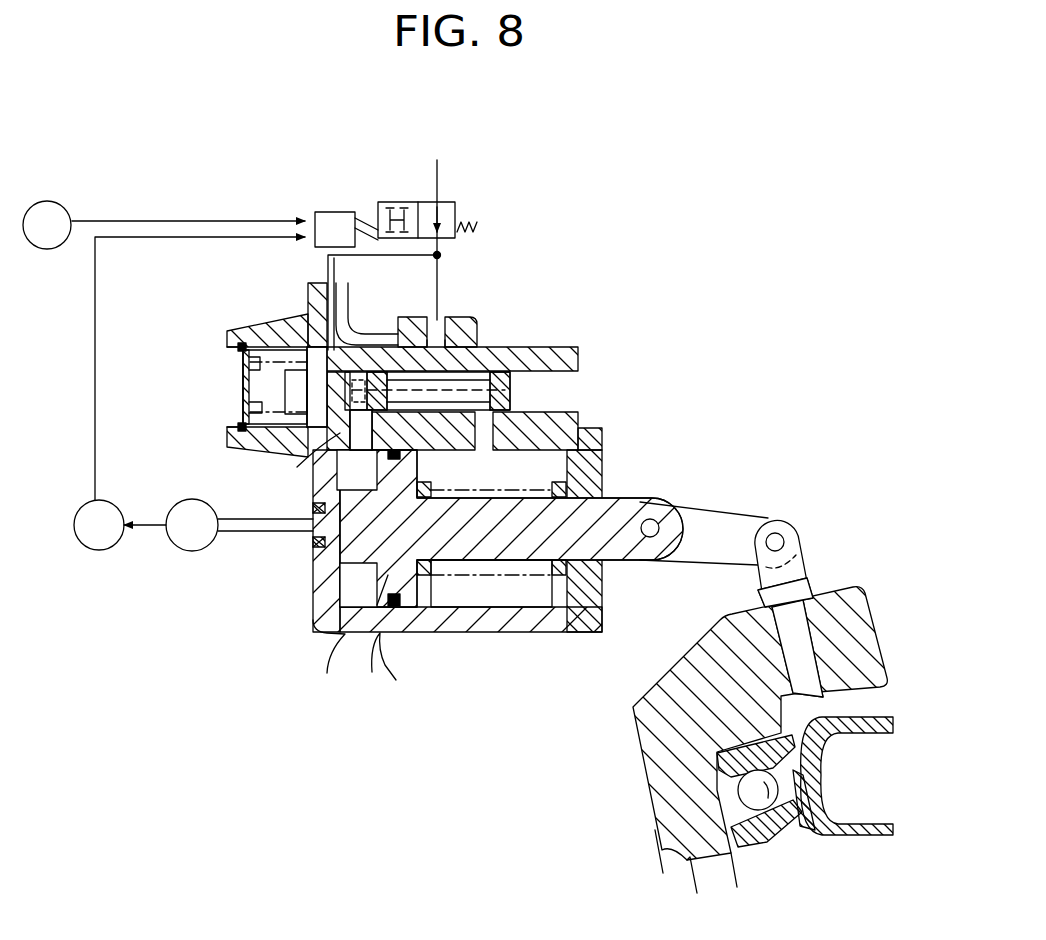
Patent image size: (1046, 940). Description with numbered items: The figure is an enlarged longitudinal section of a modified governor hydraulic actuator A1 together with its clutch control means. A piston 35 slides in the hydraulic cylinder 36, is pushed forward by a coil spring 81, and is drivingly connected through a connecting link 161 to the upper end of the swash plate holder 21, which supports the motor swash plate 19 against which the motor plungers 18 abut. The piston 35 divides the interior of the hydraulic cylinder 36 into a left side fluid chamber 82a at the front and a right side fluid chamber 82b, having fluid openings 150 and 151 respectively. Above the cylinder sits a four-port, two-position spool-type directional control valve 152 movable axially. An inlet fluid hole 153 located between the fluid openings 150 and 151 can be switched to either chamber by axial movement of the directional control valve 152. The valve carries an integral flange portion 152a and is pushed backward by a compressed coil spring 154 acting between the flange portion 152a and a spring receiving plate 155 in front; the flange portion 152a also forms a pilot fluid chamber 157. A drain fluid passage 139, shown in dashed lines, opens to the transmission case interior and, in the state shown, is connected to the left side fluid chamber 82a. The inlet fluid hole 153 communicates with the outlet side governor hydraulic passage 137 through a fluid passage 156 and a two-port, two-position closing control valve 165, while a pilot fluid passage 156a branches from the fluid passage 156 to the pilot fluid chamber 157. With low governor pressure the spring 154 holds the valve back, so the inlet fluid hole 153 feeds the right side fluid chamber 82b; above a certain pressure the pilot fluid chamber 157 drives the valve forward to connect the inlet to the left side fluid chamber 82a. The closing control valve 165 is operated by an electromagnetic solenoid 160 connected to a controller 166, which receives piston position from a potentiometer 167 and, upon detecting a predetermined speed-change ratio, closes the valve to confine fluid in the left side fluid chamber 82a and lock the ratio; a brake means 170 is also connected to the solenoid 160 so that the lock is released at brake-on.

The brake means 170 is at (55, 220).
The electromagnetic solenoid 160 is at (330, 212).
The two-port, two-position closing control valve 165 is at (462, 216).
The outlet side governor hydraulic passage 137 is at (437, 165).
The fluid passage 156 is at (437, 272).
The pilot fluid passage 156a is at (328, 260).
The pilot fluid chamber 157 is at (358, 350).
The inlet fluid hole 153 is at (430, 368).
The drain fluid passage 139 is at (495, 345).
The two-position directional control valve 152 is at (485, 368).
The flange portion 152a is at (290, 390).
The spring receiving plate 155 is at (243, 395).
The compressed coil spring 154 is at (243, 415).
The fluid opening 150 is at (345, 430).
The fluid opening 151 is at (520, 437).
The hydraulic cylinder 36 is at (602, 447).
The connecting link 161 is at (720, 515).
The controller 166 is at (96, 545).
The potentiometer 167 is at (198, 545).
The left side fluid chamber 82a is at (355, 595).
The right side fluid chamber 82b is at (538, 593).
The piston 35 is at (396, 600).
The coil spring 81 is at (468, 590).
The swash plate holder 21 is at (633, 753).
The motor plunger 18 is at (870, 730).
The motor swash plate 19 is at (777, 827).
The governor hydraulic actuator A1 is at (655, 405).